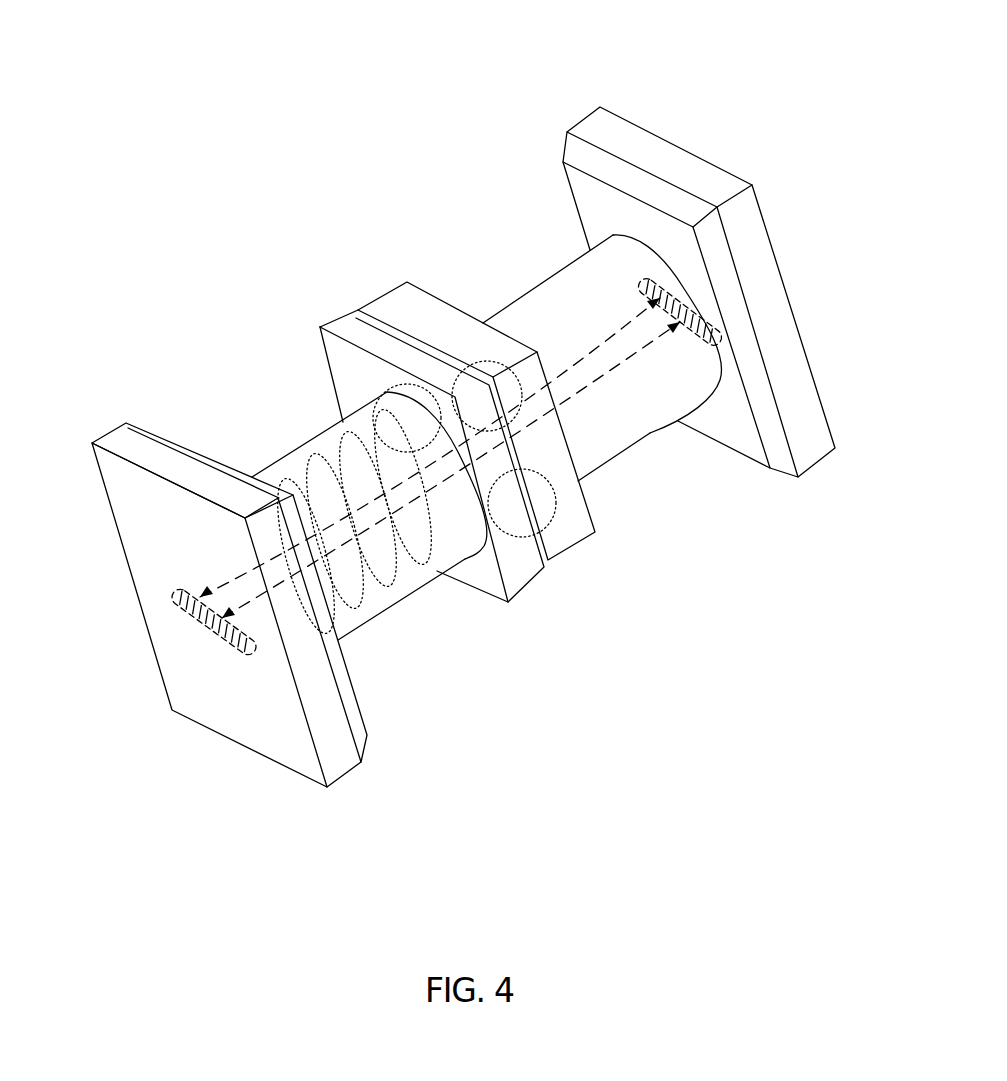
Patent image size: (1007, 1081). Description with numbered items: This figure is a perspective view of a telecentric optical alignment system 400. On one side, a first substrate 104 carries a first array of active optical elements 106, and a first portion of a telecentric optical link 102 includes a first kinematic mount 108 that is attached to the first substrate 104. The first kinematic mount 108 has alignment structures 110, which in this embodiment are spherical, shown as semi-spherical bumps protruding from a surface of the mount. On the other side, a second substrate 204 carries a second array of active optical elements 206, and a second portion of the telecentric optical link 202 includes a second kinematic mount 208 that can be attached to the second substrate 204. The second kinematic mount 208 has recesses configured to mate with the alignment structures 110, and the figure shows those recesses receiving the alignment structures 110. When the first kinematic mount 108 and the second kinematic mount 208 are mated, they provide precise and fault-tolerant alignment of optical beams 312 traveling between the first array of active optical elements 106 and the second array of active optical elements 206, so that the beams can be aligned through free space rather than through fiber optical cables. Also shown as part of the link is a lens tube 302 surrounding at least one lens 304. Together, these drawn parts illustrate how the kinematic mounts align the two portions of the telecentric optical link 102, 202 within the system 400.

The telecentric optical alignment system 400 is at (203, 166).
The first portion of a telecentric optical link 102 is at (727, 541).
The first substrate 104 is at (597, 125).
The first array of active optical elements 106 is at (731, 347).
The first kinematic mount 108 is at (412, 308).
The alignment structures 110 is at (478, 410).
The second portion of the telecentric optical link 202 is at (492, 725).
The second substrate 204 is at (128, 442).
The second array of active optical elements 206 is at (181, 604).
The second kinematic mount 208 is at (531, 562).
The lens tube 302 is at (455, 545).
The lens 304 is at (303, 478).
The optical beams 312 is at (617, 332).